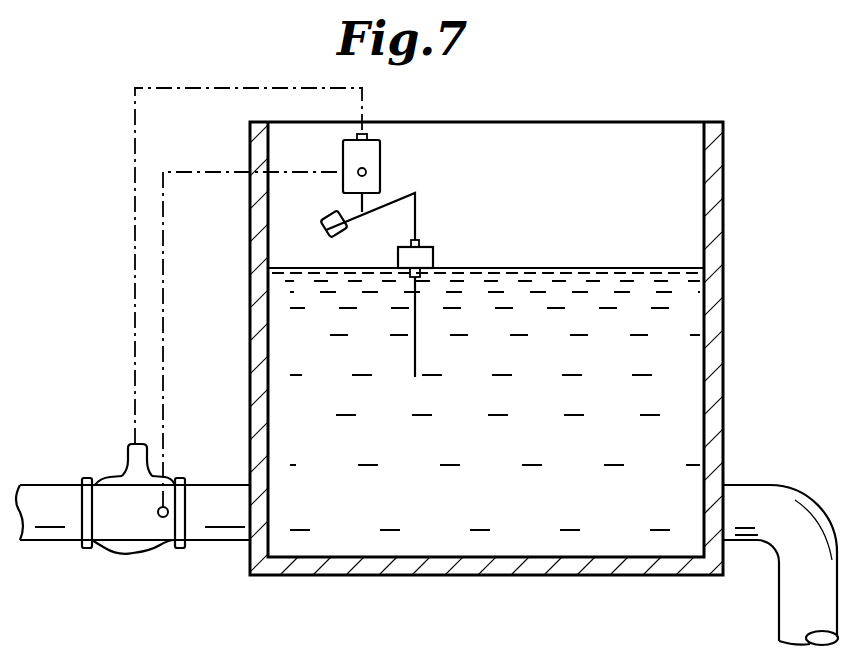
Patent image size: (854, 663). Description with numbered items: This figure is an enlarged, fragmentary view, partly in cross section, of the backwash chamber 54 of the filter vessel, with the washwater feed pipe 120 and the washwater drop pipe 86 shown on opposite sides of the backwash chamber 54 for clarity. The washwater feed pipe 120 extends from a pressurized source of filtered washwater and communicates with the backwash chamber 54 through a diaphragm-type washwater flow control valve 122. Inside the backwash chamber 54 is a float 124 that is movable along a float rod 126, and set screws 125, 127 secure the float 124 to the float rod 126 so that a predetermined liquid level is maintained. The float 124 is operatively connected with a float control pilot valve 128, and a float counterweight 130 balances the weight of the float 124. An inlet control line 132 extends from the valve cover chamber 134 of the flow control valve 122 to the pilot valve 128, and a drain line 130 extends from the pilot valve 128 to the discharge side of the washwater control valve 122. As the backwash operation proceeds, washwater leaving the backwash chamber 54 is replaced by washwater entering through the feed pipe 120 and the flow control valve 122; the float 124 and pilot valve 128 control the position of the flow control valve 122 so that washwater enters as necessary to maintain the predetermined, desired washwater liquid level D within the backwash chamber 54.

The backwash chamber 54 is at (723, 272).
The washwater liquid level D is at (586, 267).
The washwater drop pipe 86 is at (790, 488).
The washwater feed pipe 120 is at (45, 490).
The washwater flow control valve 122 is at (130, 538).
The float 124 is at (434, 257).
The set screw 125 is at (418, 240).
The float rod 126 is at (415, 328).
The set screw 127 is at (410, 277).
The float control pilot valve 128 is at (382, 150).
The drain line 130 is at (165, 277).
The inlet control line 132 is at (133, 297).
The valve cover chamber 134 is at (130, 452).